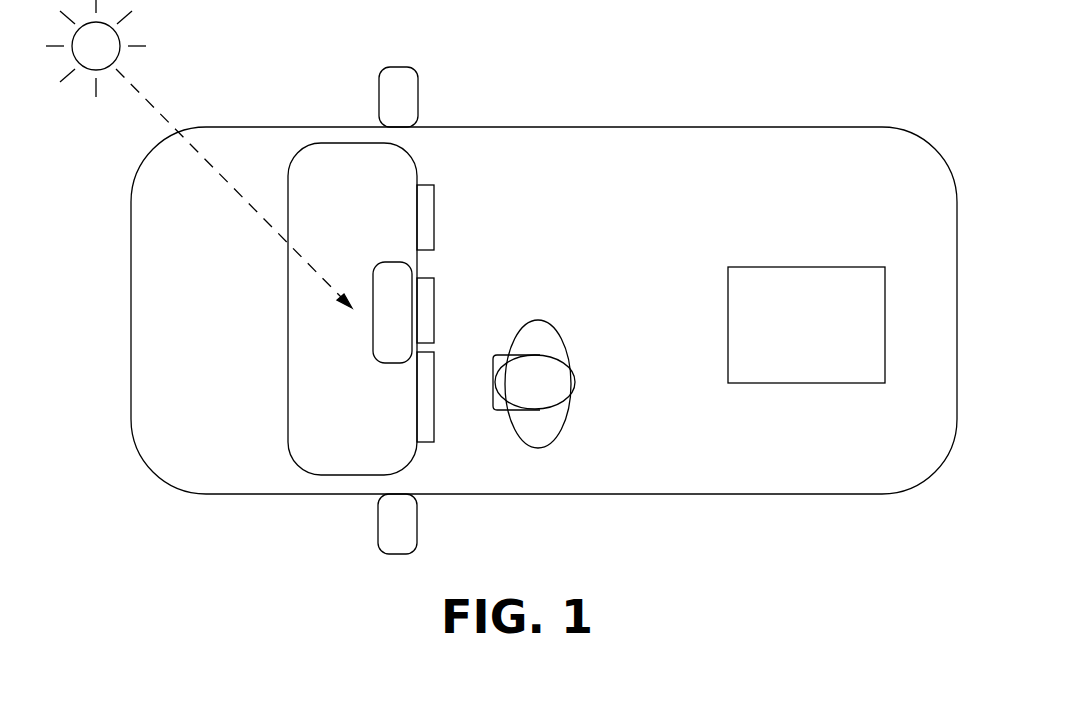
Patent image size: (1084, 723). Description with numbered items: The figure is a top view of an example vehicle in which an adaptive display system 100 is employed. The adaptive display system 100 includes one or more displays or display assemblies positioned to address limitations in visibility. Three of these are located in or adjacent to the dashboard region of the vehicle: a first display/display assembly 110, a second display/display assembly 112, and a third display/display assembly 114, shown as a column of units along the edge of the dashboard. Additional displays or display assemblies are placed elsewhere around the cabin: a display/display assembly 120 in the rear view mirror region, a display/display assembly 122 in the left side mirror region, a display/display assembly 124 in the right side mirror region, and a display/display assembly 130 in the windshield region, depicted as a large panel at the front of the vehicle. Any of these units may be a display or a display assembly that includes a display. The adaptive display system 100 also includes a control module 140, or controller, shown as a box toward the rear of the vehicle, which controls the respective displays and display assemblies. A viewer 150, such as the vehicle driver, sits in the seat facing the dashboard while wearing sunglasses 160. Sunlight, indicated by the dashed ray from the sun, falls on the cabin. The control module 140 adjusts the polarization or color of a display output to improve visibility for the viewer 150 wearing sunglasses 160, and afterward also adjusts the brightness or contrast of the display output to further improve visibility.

The adaptive display system 100 is at (821, 23).
The first display/display assembly 110 is at (437, 418).
The second display/display assembly 112 is at (435, 310).
The third display/display assembly 114 is at (434, 203).
The display/display assembly 120 is at (397, 273).
The display/display assembly 122 is at (398, 555).
The display/display assembly 124 is at (398, 63).
The display/display assembly 130 is at (351, 143).
The control module 140 is at (806, 325).
The viewer 150 is at (575, 388).
The sunglasses 160 is at (497, 352).